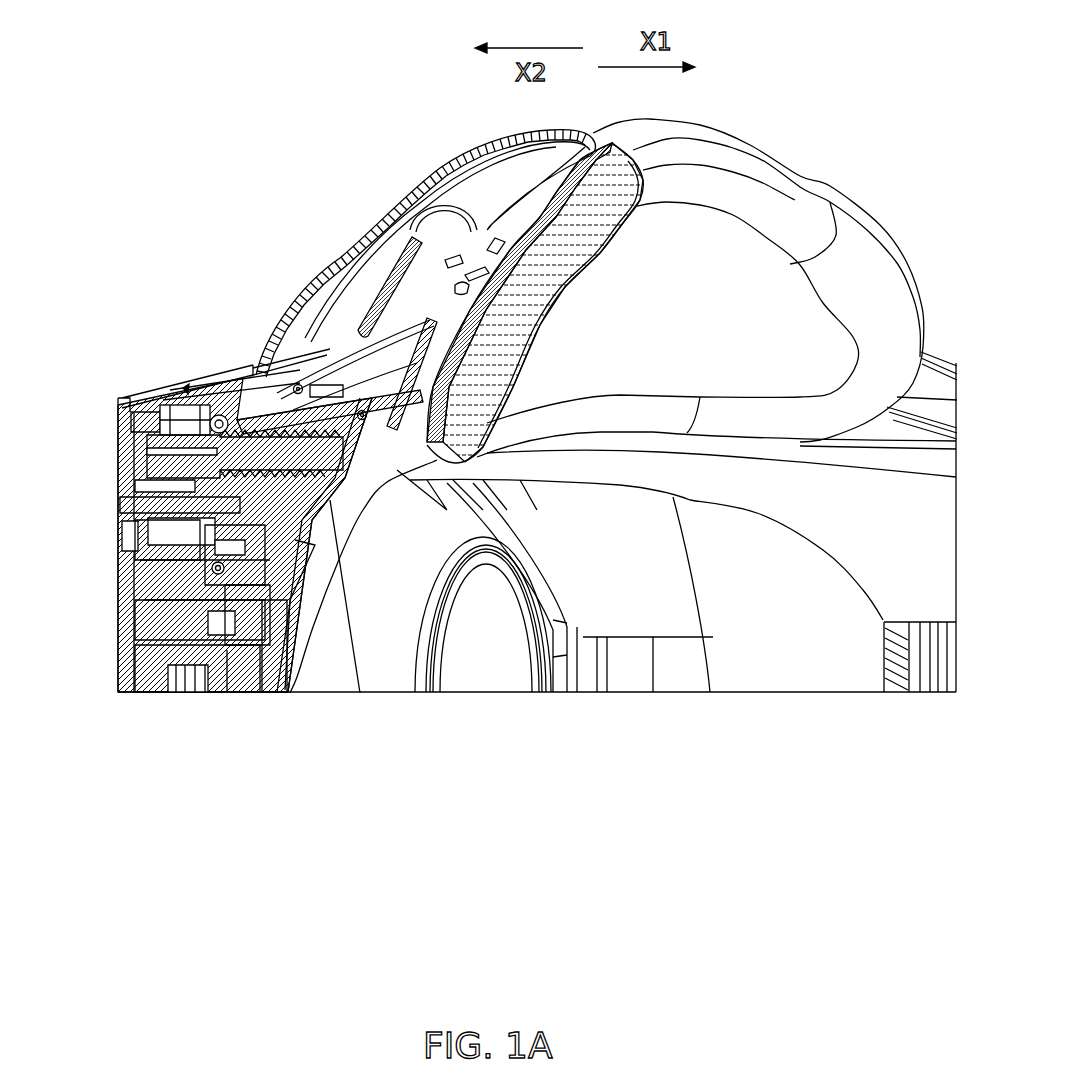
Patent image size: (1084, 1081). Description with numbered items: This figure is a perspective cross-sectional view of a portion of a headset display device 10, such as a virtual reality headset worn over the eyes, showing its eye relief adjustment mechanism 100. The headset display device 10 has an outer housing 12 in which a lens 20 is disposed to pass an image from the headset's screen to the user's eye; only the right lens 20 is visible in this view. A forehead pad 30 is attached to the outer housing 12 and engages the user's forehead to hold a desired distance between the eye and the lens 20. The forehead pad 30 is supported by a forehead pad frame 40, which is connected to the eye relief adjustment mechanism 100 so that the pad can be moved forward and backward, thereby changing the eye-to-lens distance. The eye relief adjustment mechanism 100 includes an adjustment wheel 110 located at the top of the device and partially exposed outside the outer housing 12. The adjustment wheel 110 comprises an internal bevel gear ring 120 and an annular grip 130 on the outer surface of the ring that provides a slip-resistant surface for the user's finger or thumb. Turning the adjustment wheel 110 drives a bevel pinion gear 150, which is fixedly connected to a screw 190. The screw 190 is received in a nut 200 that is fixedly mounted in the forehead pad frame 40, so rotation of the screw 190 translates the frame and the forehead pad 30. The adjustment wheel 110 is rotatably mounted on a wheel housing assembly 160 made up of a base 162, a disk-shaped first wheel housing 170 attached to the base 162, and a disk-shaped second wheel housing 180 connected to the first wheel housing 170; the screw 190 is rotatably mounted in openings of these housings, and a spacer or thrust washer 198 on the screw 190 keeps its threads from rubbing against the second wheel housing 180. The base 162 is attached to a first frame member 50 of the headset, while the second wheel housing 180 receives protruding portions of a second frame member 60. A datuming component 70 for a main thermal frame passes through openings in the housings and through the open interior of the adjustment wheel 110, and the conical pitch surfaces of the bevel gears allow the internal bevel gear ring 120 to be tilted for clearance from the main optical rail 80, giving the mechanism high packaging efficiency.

The headset display device 10 is at (302, 98).
The outer housing 12 is at (137, 402).
The lens 20 is at (473, 650).
The forehead pad 30 is at (777, 180).
The forehead pad frame 40 is at (368, 462).
The first frame member 50 is at (140, 545).
The second frame member 60 is at (306, 694).
The datuming component 70 is at (223, 694).
The main optical rail 80 is at (272, 694).
The eye relief adjustment mechanism 100 is at (605, 858).
The adjustment wheel 110 is at (188, 388).
The internal bevel gear ring 120 is at (185, 392).
The annular grip 130 is at (186, 392).
The bevel pinion gear 150 is at (212, 415).
The wheel housing assembly 160 is at (824, 737).
The base 162 is at (126, 478).
The first wheel housing 170 is at (150, 694).
The second wheel housing 180 is at (166, 694).
The screw 190 is at (298, 385).
The spacer or thrust washer 198 is at (236, 398).
The nut 200 is at (302, 512).